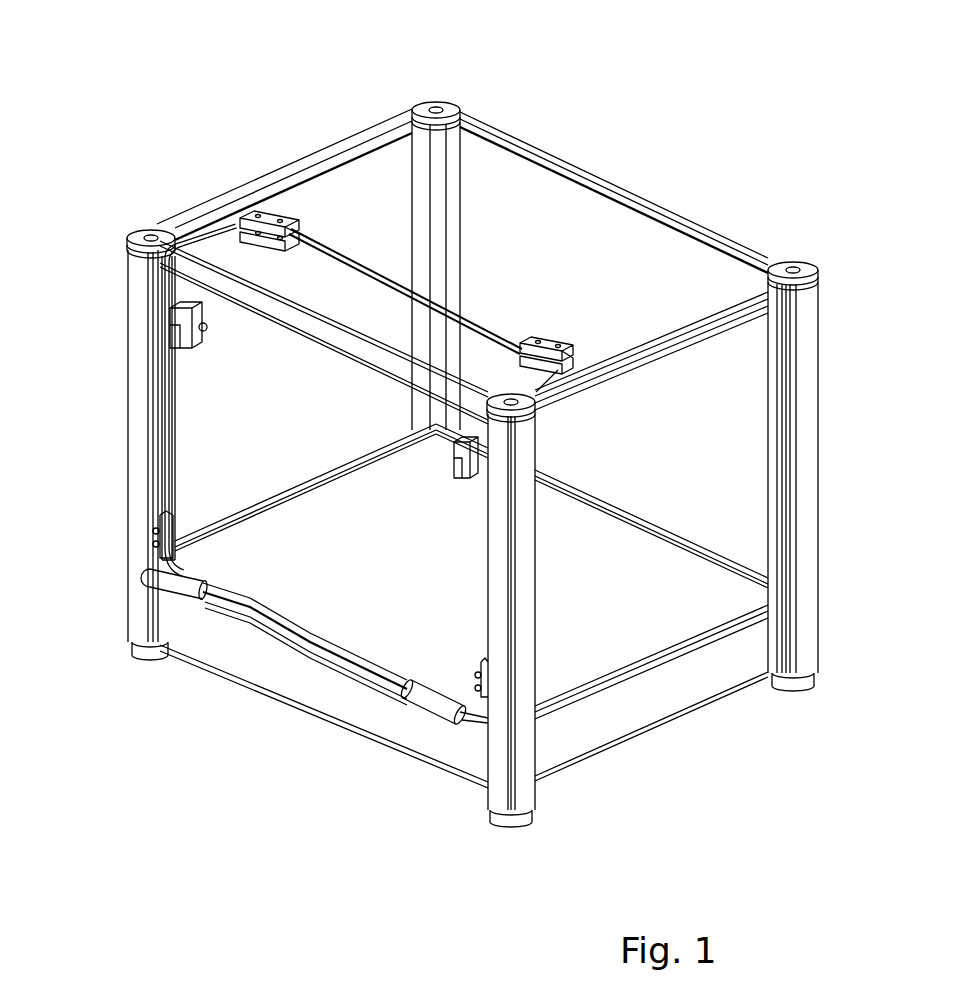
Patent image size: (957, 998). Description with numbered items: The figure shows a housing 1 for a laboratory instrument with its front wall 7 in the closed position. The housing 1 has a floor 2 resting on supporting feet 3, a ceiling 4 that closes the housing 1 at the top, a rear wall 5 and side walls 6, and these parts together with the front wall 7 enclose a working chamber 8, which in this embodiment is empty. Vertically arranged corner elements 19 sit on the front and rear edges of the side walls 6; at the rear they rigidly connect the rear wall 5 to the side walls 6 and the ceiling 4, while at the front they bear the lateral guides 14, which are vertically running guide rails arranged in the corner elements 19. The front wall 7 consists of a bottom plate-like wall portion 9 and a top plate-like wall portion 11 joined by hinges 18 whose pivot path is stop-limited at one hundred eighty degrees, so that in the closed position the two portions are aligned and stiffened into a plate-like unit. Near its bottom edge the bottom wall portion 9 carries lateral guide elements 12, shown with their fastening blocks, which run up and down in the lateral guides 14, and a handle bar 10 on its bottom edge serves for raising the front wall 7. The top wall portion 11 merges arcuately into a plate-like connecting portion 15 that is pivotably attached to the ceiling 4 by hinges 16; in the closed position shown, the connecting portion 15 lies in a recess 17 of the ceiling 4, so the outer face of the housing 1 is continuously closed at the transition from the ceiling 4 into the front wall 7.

The housing 1 is at (172, 75).
The floor 2 is at (716, 689).
The supporting feet 3 is at (150, 657).
The ceiling 4 is at (693, 262).
The rear wall 5 is at (612, 217).
The side walls 6 is at (750, 353).
The front wall 7 is at (178, 397).
The working chamber 8 is at (636, 628).
The bottom wall portion 9 is at (257, 570).
The handle bar 10 is at (262, 627).
The top wall portion 11 is at (180, 294).
The lateral guide elements 12 is at (158, 533).
The lateral guides 14 is at (165, 433).
The connecting portion 15 is at (235, 252).
The hinges 16 is at (266, 210).
The recess 17 is at (198, 237).
The hinges 18 is at (175, 327).
The corner elements 19 is at (131, 273).